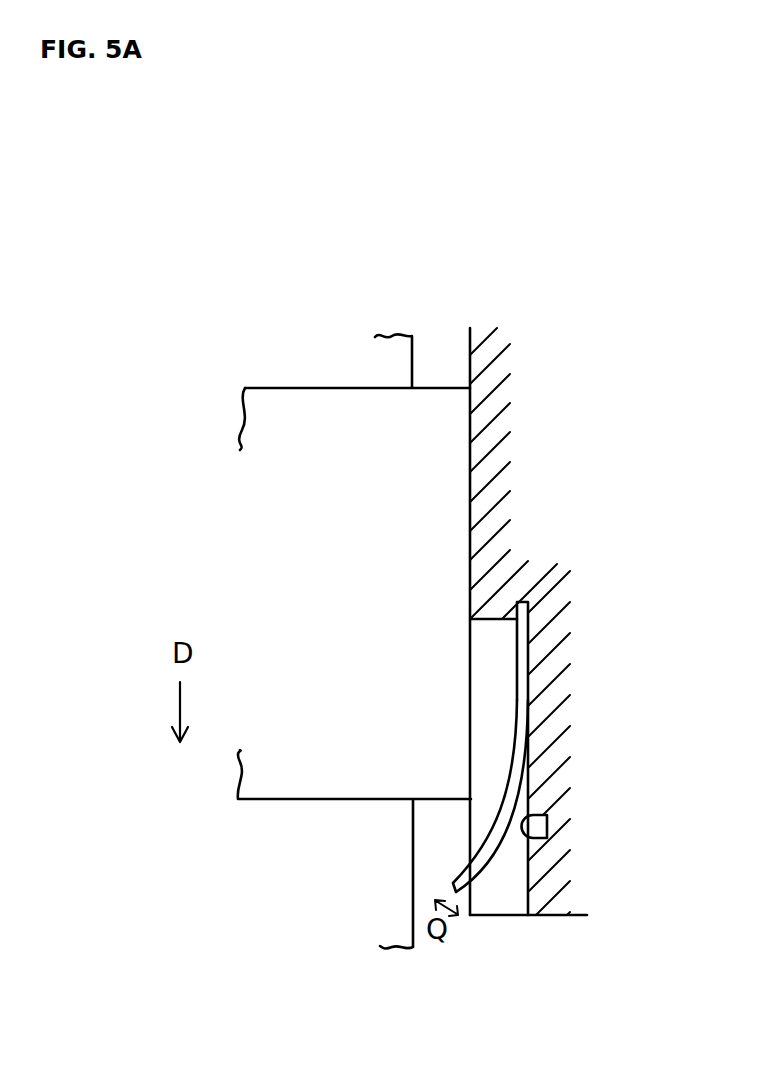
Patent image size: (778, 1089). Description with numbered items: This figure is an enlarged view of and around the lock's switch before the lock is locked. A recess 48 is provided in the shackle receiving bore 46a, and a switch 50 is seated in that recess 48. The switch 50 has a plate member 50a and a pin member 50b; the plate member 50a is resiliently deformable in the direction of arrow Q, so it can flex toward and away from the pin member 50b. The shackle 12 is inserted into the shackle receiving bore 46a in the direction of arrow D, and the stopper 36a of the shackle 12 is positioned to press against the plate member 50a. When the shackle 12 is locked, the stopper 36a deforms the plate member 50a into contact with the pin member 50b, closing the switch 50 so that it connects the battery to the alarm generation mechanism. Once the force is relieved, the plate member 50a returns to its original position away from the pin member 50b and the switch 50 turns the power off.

The shackle 12 is at (428, 379).
The shackle receiving bore 46a is at (470, 362).
The stopper 36a is at (470, 640).
The switch 50 is at (593, 764).
The plate member 50a is at (512, 783).
The pin member 50b is at (547, 815).
The recess 48 is at (531, 892).